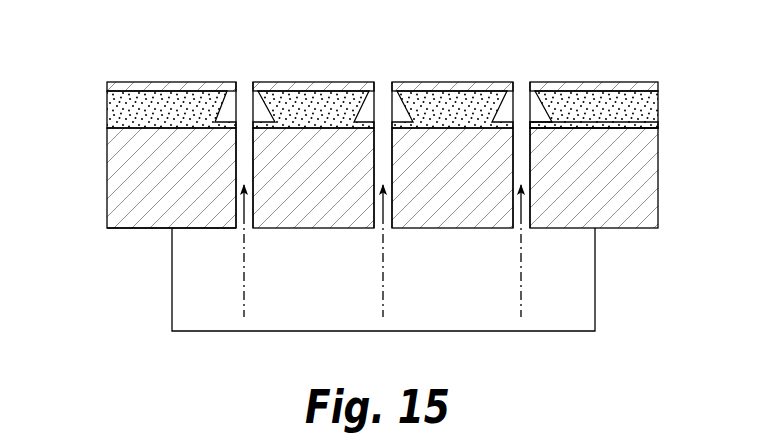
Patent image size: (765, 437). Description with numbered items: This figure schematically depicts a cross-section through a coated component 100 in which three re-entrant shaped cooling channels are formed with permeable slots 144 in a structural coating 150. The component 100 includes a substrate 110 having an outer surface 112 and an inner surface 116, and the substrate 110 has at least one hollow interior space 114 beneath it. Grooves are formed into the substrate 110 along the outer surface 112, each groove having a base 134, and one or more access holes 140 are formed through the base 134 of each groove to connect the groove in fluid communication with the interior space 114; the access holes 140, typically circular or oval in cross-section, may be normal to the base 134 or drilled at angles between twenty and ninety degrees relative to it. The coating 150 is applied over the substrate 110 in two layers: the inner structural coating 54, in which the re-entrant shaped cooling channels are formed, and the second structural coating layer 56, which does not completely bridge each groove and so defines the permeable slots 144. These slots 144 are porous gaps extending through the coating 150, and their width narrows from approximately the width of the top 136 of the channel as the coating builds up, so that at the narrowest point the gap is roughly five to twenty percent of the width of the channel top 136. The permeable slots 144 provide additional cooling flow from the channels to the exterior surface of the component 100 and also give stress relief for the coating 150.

The component 100 is at (372, 185).
The substrate 110 is at (638, 168).
The outer surface 112 is at (117, 130).
The interior space 114 is at (339, 290).
The inner surface 116 is at (140, 228).
The base 134 is at (542, 125).
The top of the channel 136 is at (517, 88).
The access holes 140 is at (247, 213).
The permeable slots 144 is at (238, 78).
The coating 150 is at (384, 108).
The inner structural coating 54 is at (650, 108).
The second structural coating layer 56 is at (138, 87).